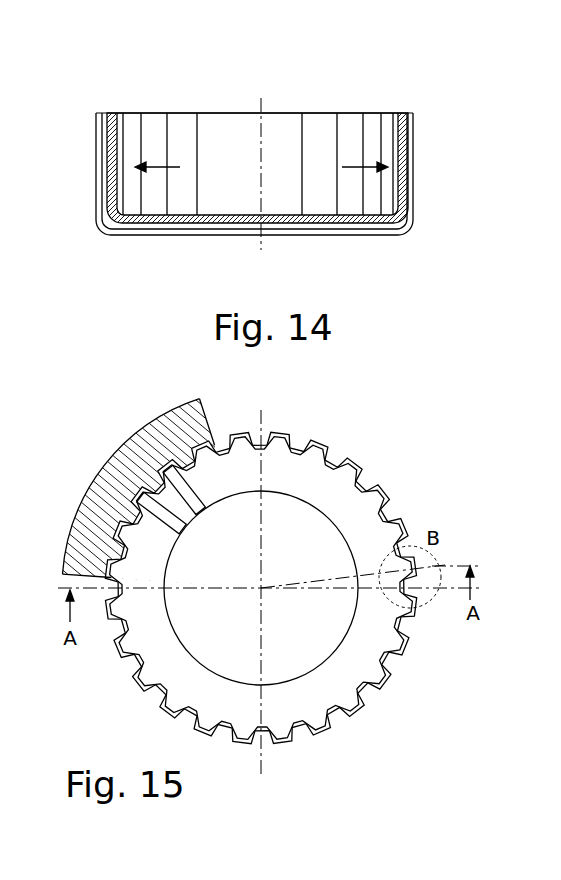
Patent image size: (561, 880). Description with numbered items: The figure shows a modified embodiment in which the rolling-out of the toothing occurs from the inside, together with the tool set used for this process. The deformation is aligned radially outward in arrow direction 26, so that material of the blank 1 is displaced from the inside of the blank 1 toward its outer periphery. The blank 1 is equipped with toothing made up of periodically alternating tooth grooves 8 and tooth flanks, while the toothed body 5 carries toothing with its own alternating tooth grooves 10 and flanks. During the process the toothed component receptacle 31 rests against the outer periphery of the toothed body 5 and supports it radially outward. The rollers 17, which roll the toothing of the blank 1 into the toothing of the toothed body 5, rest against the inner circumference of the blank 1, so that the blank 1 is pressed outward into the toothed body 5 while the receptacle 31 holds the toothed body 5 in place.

In FIG. 14, the blank 1 is at (184, 237).
In FIG. 15, the blank 1 is at (288, 729).
In FIG. 14, the toothed body 5 is at (147, 237).
In FIG. 15, the toothed body 5 is at (236, 750).
In FIG. 14, the tooth grooves 8 is at (398, 137).
In FIG. 14, the tooth grooves 10 is at (413, 175).
In FIG. 15, the rollers 17 is at (200, 486).
In FIG. 14, the arrow direction 26 is at (175, 160).
In FIG. 15, the toothed component receptacle 31 is at (208, 409).